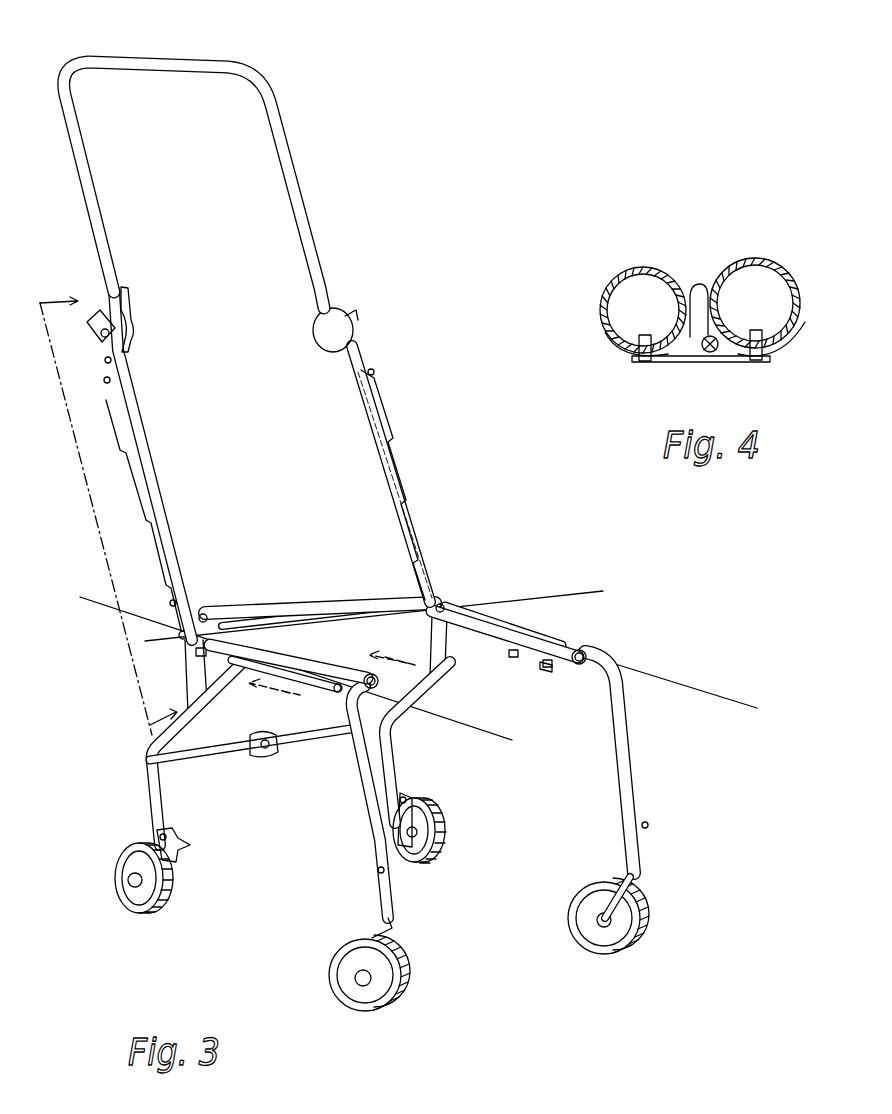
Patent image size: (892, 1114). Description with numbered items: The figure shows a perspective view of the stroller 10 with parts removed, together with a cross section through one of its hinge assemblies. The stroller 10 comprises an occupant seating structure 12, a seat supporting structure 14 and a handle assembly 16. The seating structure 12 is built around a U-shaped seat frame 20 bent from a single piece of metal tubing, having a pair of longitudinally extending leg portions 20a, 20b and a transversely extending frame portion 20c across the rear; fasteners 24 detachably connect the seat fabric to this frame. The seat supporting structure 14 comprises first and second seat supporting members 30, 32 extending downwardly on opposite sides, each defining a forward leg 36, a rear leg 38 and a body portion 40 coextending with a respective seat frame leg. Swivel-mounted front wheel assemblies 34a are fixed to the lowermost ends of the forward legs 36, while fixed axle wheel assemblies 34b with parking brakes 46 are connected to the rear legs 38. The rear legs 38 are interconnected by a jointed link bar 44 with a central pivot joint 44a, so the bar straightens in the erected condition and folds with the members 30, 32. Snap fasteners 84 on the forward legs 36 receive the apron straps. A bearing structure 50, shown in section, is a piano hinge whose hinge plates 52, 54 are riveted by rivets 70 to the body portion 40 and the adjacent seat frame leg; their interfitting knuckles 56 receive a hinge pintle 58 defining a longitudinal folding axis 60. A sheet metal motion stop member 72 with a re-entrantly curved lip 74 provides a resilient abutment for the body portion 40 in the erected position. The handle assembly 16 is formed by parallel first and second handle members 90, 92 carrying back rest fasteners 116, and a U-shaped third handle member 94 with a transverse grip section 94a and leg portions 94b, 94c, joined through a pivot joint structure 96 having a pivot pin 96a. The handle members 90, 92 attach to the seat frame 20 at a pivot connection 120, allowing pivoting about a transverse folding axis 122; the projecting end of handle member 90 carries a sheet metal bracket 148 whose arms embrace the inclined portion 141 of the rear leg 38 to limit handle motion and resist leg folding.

In FIG. 3, the stroller 10 is at (444, 418).
In FIG. 3, the occupant seating structure 12 is at (513, 613).
In FIG. 3, the seat supporting structure 14 is at (638, 725).
In FIG. 3, the handle assembly 16 is at (328, 240).
In FIG. 3, the seat frame 20 is at (369, 632).
In FIG. 3, the seat frame leg portion 20a is at (322, 683).
In FIG. 4, the seat frame leg portion 20a is at (778, 267).
In FIG. 3, the seat frame leg portion 20b is at (445, 620).
In FIG. 3, the transversely extending frame portion 20c is at (270, 605).
In FIG. 3, the fasteners 24 is at (197, 652).
In FIG. 3, the first seat supporting member 30 is at (361, 823).
In FIG. 3, the second seat supporting member 32 is at (613, 782).
In FIG. 3, the swivel-mounted front wheel assembly 34a is at (405, 993).
In FIG. 3, the fixed axle wheel assembly 34b is at (170, 908).
In FIG. 3, the forward leg 36 is at (380, 770).
In FIG. 3, the rear leg 38 is at (140, 787).
In FIG. 3, the body portion 40 is at (533, 635).
In FIG. 4, the body portion 40 is at (605, 300).
In FIG. 3, the jointed link bar 44 is at (200, 755).
In FIG. 3, the pivot joint 44a is at (276, 750).
In FIG. 3, the parking brake 46 is at (190, 850).
In FIG. 3, the bearing structure 50 is at (553, 664).
In FIG. 4, the bearing structure 50 is at (726, 347).
In FIG. 4, the hinge plate 52 is at (665, 362).
In FIG. 4, the hinge plate 54 is at (742, 362).
In FIG. 4, the knuckles 56 is at (700, 352).
In FIG. 4, the hinge pintle 58 is at (718, 362).
In FIG. 3, the folding axis 60 is at (470, 740).
In FIG. 4, the folding axis 60 is at (710, 354).
In FIG. 4, the rivets 70 is at (648, 336).
In FIG. 4, the motion stop member 72 is at (713, 290).
In FIG. 4, the re-entrantly curved lip 74 is at (690, 290).
In FIG. 3, the fasteners 84 is at (377, 870).
In FIG. 3, the first handle member 90 is at (155, 498).
In FIG. 3, the second handle member 92 is at (396, 458).
In FIG. 3, the third handle member 94 is at (222, 168).
In FIG. 3, the transverse grip section 94a is at (160, 65).
In FIG. 3, the leg portion 94b is at (95, 200).
In FIG. 3, the leg portion 94c is at (298, 170).
In FIG. 3, the pivot joint structure 96 is at (148, 337).
In FIG. 3, the pivot pin 96a is at (104, 340).
In FIG. 3, the fasteners 116 is at (107, 383).
In FIG. 3, the pivot connection 120 is at (178, 634).
In FIG. 3, the folding axis 122 is at (595, 595).
In FIG. 3, the inclined portion 141 is at (150, 745).
In FIG. 3, the sheet metal bracket 148 is at (180, 688).